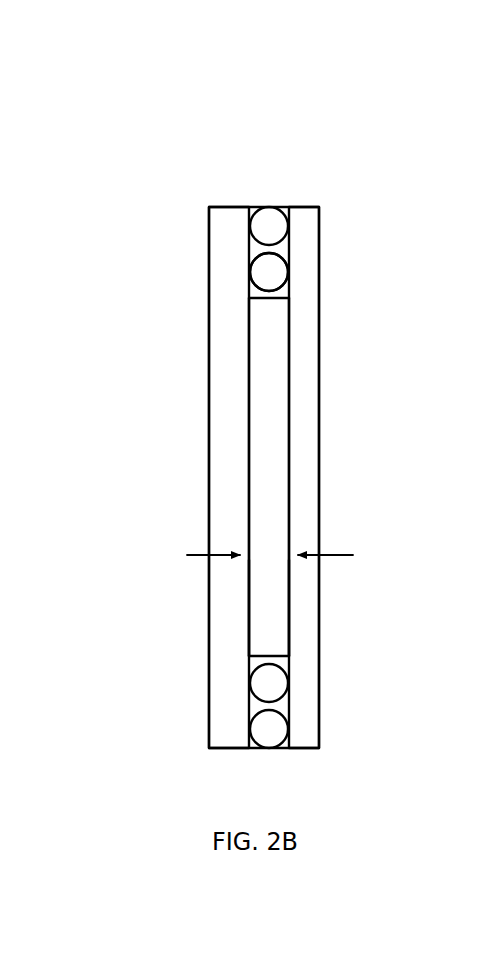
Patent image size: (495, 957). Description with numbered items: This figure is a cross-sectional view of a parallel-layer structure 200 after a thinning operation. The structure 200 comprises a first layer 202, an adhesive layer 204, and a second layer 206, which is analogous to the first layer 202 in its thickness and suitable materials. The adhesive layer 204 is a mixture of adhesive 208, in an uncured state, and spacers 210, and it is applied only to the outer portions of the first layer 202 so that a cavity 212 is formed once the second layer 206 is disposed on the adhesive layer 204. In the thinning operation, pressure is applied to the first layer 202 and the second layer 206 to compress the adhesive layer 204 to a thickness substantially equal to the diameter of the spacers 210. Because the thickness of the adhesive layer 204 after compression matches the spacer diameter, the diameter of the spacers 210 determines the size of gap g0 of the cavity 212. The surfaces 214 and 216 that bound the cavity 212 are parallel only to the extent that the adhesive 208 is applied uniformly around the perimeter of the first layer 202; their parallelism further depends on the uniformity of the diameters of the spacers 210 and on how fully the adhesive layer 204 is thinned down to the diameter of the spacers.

The structure 200 is at (138, 96).
The first layer 202 is at (347, 457).
The adhesive layer 204 is at (327, 346).
The second layer 206 is at (188, 457).
The adhesive 208 is at (327, 271).
The spacers 210 is at (208, 294).
The cavity 212 is at (327, 477).
The surface 214 is at (343, 613).
The surface 216 is at (197, 613).
The gap g0 is at (297, 539).